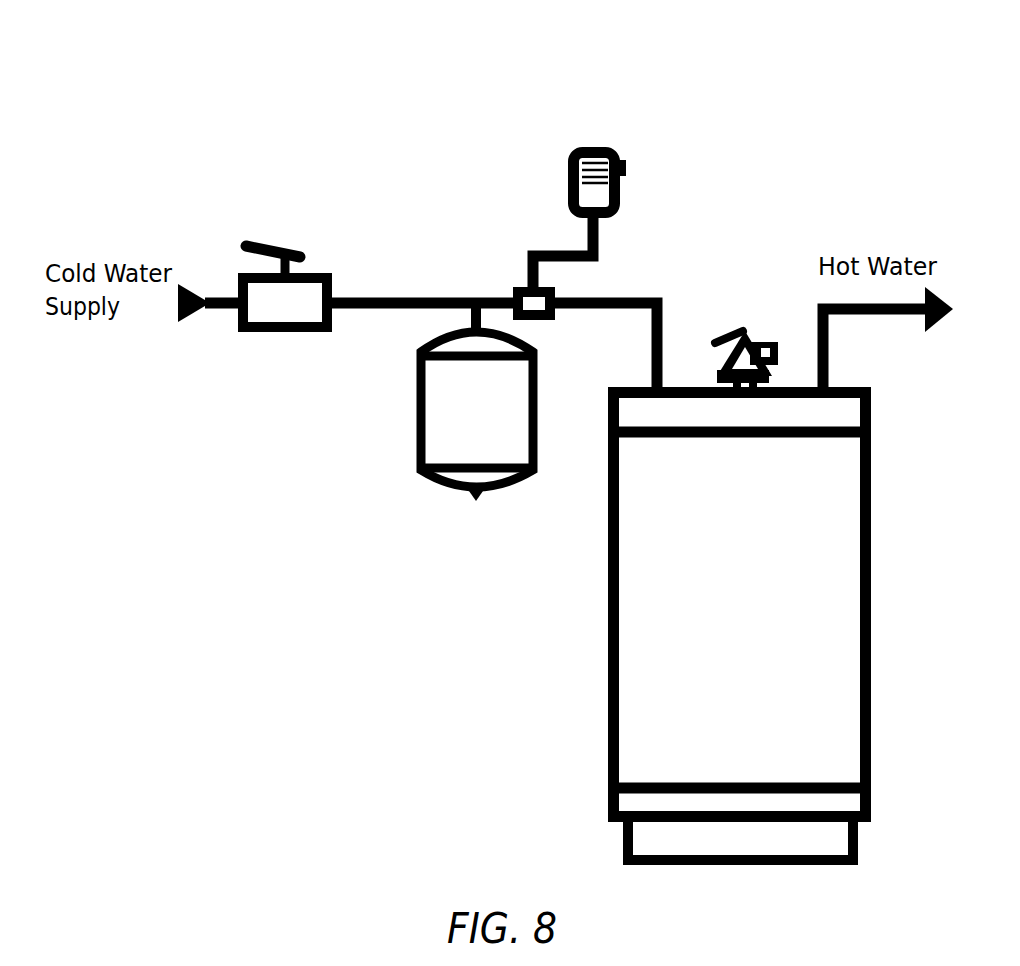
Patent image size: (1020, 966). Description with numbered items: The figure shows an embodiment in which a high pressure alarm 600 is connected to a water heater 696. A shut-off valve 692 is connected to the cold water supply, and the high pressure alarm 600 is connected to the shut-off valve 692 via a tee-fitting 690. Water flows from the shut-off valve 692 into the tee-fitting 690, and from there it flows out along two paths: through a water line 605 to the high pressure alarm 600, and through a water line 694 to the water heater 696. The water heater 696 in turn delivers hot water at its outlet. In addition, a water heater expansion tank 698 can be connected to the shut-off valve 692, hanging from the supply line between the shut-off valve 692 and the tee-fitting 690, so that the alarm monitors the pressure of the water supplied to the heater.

The high pressure alarm 600 is at (587, 122).
The water line 605 is at (562, 249).
The tee-fitting 690 is at (524, 288).
The shut-off valve 692 is at (276, 232).
The water line 694 is at (632, 297).
The water heater 696 is at (760, 634).
The water heater expansion tank 698 is at (463, 516).